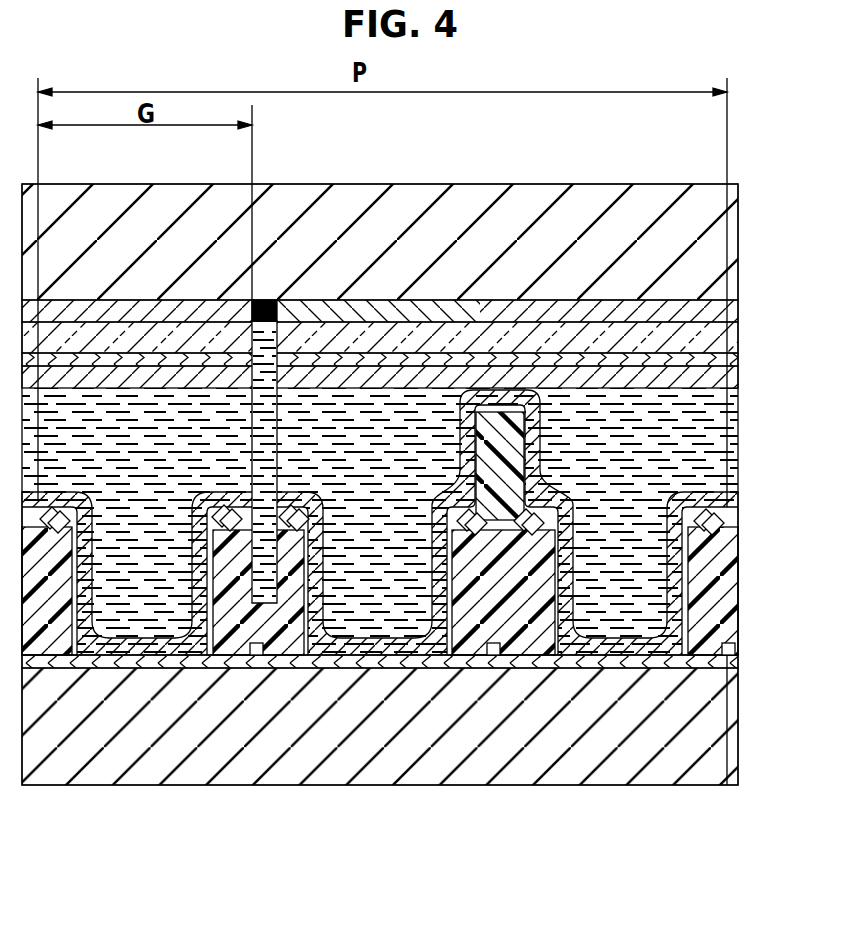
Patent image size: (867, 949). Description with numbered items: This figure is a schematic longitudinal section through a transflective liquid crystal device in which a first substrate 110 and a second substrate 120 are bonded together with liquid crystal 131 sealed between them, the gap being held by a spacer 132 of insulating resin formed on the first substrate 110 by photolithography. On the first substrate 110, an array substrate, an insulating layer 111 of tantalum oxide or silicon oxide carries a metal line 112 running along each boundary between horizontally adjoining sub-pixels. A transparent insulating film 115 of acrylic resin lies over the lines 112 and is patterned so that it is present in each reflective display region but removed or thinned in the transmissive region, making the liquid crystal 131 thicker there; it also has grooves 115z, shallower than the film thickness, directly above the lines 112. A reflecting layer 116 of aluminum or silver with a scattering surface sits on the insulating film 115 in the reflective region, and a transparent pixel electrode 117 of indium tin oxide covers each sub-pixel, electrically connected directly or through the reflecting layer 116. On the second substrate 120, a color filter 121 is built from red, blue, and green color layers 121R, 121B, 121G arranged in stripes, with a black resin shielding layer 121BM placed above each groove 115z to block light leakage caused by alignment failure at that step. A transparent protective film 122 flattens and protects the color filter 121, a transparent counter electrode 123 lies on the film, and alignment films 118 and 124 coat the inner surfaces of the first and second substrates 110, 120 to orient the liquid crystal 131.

The first substrate 110 is at (738, 720).
The insulating layer 111 is at (738, 662).
The metal line 112 is at (490, 655).
The insulating film 115 is at (728, 582).
The groove 115z is at (262, 522).
The reflecting layer 116 is at (735, 530).
The pixel electrode 117 is at (735, 518).
The alignment film 118 is at (738, 496).
The second substrate 120 is at (738, 234).
The color filter 121 is at (738, 300).
The color layer 121R is at (137, 305).
The shielding layer 121BM is at (267, 300).
The color layer 121B is at (393, 305).
The color layer 121G is at (598, 305).
The transparent protective film 122 is at (738, 336).
The counter electrode 123 is at (738, 360).
The alignment film 124 is at (738, 377).
The liquid crystal 131 is at (738, 412).
The spacer 132 is at (482, 447).